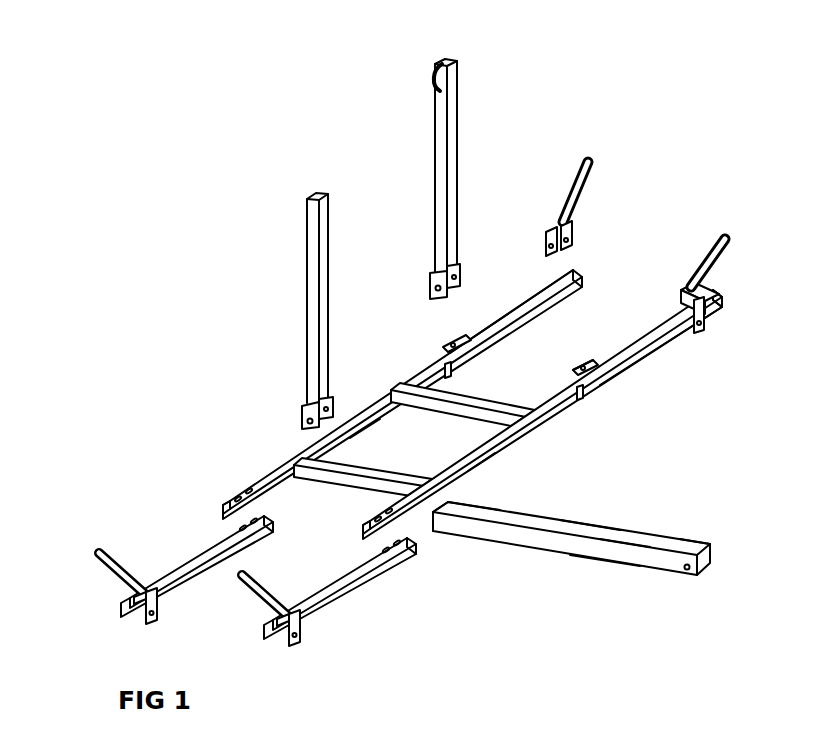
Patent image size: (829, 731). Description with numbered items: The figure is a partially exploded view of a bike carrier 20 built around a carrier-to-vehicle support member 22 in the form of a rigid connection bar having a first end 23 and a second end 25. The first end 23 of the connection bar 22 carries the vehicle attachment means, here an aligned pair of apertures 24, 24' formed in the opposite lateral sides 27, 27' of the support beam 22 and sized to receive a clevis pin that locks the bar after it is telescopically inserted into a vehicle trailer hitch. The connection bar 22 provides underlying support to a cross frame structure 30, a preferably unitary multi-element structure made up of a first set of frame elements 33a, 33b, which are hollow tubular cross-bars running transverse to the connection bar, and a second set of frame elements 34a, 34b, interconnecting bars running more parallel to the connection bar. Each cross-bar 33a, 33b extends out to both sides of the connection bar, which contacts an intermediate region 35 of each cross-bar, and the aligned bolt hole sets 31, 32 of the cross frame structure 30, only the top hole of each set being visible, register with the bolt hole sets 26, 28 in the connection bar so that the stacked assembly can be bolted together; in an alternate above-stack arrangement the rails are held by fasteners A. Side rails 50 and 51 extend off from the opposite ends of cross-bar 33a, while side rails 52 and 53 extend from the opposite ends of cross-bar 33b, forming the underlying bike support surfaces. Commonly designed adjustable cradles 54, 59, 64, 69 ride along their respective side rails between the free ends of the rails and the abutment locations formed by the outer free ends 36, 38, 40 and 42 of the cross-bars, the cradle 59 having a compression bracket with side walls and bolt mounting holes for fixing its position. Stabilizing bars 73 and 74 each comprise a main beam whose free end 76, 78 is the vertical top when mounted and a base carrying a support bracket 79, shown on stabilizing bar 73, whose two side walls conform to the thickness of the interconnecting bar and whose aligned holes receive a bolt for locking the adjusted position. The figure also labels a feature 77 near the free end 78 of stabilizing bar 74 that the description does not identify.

The bike carrier 20 is at (751, 181).
The carrier-to-vehicle support member 22 is at (586, 572).
The first end 23 is at (712, 567).
The aperture 24 is at (663, 612).
The aperture 24' is at (728, 527).
The second end 25 is at (433, 532).
The bolt hole set 26 is at (585, 521).
The lateral side 27 is at (600, 592).
The lateral side 27' is at (651, 511).
The bolt hole set 28 is at (469, 505).
The cross frame structure 30 is at (545, 434).
The bolt hole set 31 is at (545, 434).
The bolt hole set 32 is at (371, 382).
The first set frame element 33a is at (215, 471).
The first set frame element 33b is at (566, 406).
The second set frame element 34a is at (335, 487).
The second set frame element 34b is at (481, 398).
The intermediate region 35 is at (366, 427).
The outer free end of cross-bar 36 is at (222, 507).
The outer free end of cross-bar 38 is at (462, 338).
The outer free end of cross-bar 40 is at (360, 538).
The outer free end of cross-bar 42 is at (600, 355).
The side rail 50 is at (203, 553).
The side rail 51 is at (517, 309).
The side rail 52 is at (318, 610).
The side rail 53 is at (661, 347).
The adjustable cradle 54 is at (96, 565).
The adjustable cradle 59 is at (578, 224).
The adjustable cradle 64 is at (247, 595).
The adjustable cradle 69 is at (707, 241).
The stabilizing bar 73 is at (239, 299).
The stabilizing bar 74 is at (406, 152).
The free end 76 is at (307, 196).
The hook 77 is at (433, 70).
The free end 78 is at (448, 58).
The support bracket 79 is at (301, 414).
The fasteners A is at (584, 352).